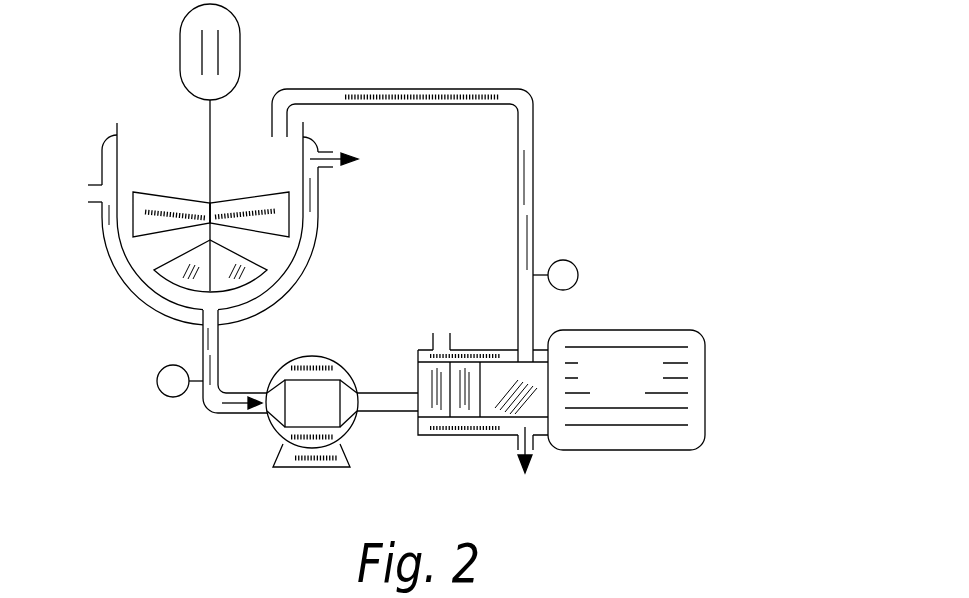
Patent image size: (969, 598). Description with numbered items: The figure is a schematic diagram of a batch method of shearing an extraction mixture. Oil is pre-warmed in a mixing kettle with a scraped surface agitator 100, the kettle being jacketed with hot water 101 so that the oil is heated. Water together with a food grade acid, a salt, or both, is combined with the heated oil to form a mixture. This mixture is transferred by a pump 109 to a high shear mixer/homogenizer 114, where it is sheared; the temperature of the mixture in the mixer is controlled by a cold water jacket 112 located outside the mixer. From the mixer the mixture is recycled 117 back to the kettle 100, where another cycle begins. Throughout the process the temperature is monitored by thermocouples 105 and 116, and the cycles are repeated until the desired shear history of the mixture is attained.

The mixing kettle with scraped surface agitator 100 is at (210, 177).
The hot water jacket 101 is at (92, 193).
The thermocouple 105 is at (173, 365).
The pump 109 is at (298, 420).
The cold water jacket 112 is at (440, 322).
The high shear mixer/homogenizer 114 is at (639, 406).
The thermocouple 116 is at (563, 260).
The recycle line 117 is at (388, 89).